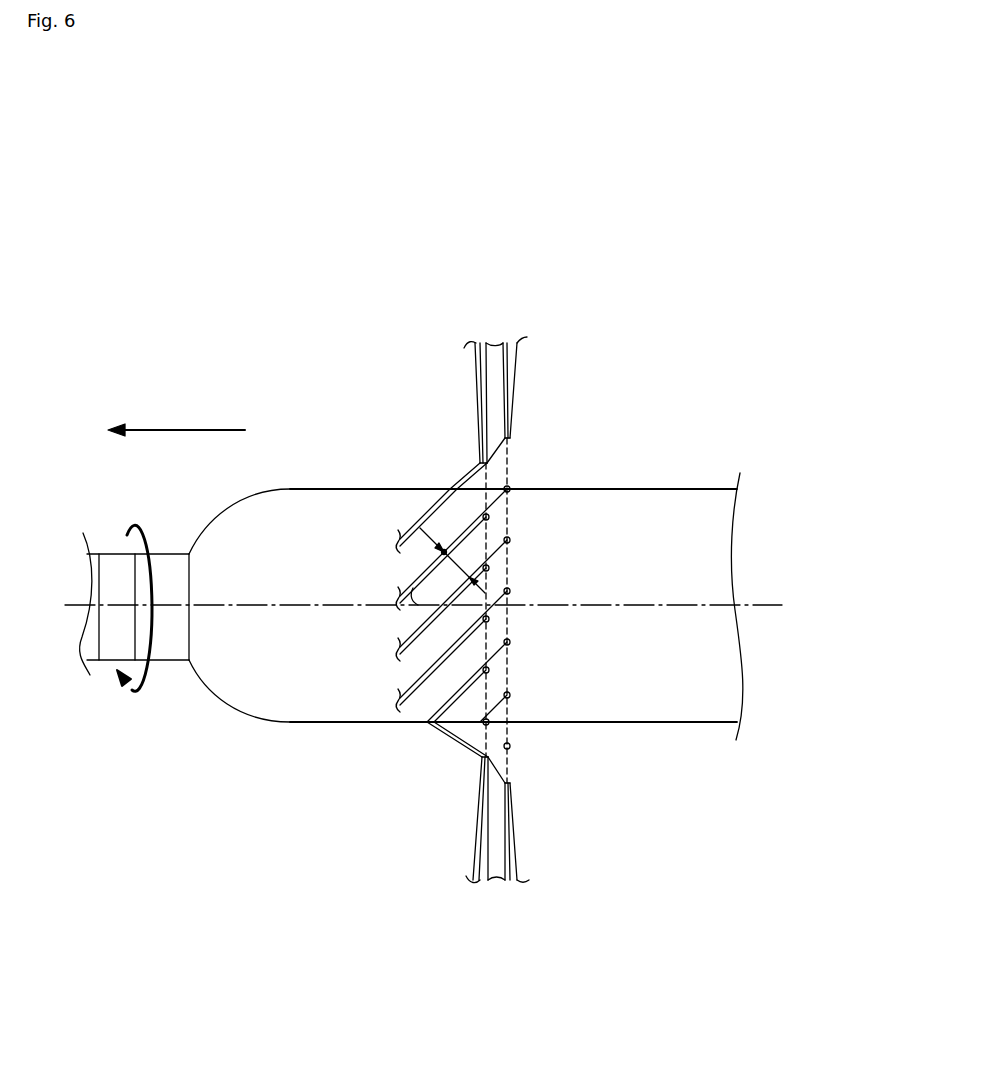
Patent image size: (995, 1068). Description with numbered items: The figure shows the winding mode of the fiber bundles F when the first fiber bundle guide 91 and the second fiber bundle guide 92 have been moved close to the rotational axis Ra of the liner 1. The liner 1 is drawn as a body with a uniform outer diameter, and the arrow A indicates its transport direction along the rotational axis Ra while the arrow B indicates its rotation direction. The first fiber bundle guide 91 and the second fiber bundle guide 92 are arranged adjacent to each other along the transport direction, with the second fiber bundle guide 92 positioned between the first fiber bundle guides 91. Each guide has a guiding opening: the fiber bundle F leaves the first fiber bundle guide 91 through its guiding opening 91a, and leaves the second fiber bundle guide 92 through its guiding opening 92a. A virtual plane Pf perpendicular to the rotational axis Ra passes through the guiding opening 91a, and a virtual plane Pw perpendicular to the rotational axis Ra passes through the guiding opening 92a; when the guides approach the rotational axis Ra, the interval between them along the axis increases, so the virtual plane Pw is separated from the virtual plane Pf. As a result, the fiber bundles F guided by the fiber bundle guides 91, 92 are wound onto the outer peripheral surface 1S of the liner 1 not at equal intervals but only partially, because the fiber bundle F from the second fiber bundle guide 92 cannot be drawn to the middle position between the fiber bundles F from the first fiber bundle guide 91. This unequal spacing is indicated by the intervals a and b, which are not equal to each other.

The liner 1 is at (411, 583).
The outer peripheral surface 1S is at (693, 489).
The rotational axis Ra is at (772, 603).
The first fiber bundle guide 91 is at (518, 376).
The guiding opening 91a is at (512, 441).
The second fiber bundle guide 92 is at (474, 376).
The guiding opening 92a is at (479, 465).
The fiber bundle F is at (420, 514).
The virtual plane Pw is at (496, 530).
The virtual plane Pf is at (508, 563).
The arrow A is at (176, 414).
The arrow B is at (134, 586).
The interval a is at (427, 542).
The interval b is at (464, 572).